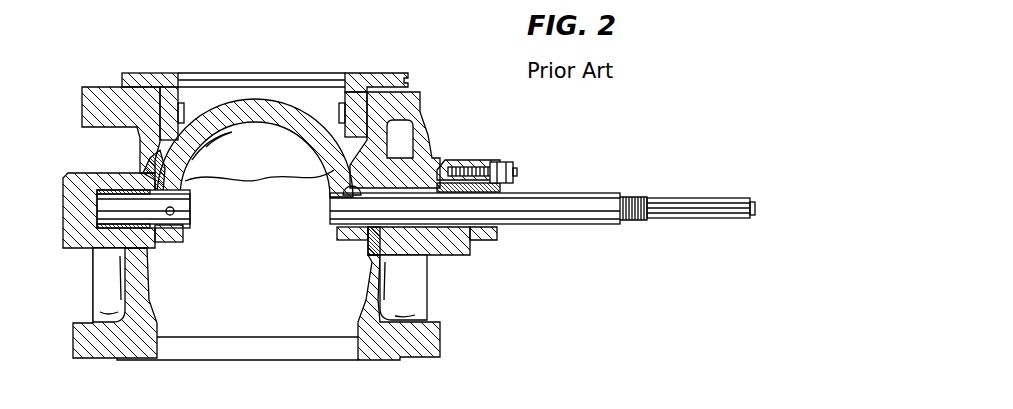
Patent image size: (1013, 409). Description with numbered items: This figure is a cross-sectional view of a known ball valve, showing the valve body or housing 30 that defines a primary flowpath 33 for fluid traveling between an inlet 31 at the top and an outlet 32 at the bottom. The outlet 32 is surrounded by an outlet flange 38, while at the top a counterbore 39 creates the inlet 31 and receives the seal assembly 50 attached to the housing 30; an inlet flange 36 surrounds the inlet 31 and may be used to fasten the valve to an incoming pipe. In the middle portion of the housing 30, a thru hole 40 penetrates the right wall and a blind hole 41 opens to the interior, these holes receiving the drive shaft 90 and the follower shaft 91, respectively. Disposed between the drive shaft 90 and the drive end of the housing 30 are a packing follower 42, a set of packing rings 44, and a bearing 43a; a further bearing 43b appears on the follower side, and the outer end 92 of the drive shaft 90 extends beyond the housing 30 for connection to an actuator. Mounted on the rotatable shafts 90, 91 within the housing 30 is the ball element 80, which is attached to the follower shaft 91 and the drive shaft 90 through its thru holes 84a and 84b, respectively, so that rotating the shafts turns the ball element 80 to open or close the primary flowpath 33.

The valve body or housing 30 is at (420, 342).
The inlet 31 is at (203, 60).
The outlet 32 is at (228, 372).
The primary flowpath 33 is at (228, 249).
The inlet flange 36 is at (92, 85).
The outlet flange 38 is at (143, 361).
The counterbore 39 is at (357, 115).
The thru hole 40 is at (435, 255).
The blind hole 41 is at (83, 212).
The packing follower 42 is at (498, 230).
The bearing 43a is at (372, 243).
The trunnion bearing 43b is at (148, 245).
The packing rings 44 is at (437, 167).
The seal assembly 50 is at (367, 73).
The ball element 80 is at (165, 170).
The thru hole 84a is at (185, 191).
The thru hole 84b is at (335, 238).
The drive shaft 90 is at (595, 222).
The follower shaft 91 is at (107, 218).
The shaft end 92 is at (745, 200).